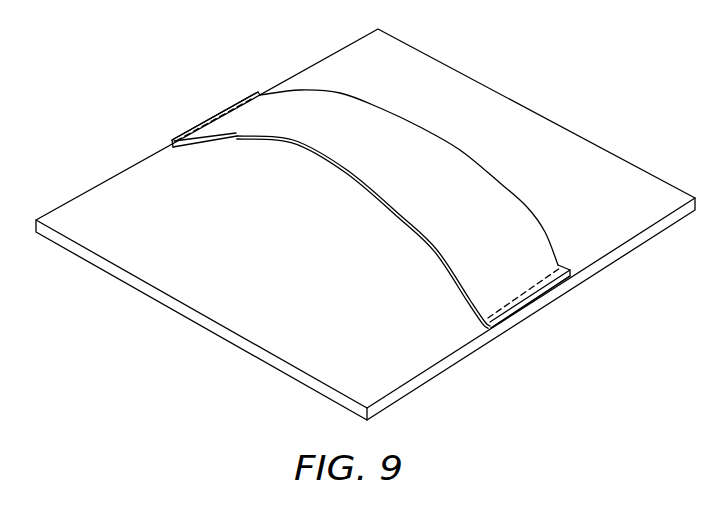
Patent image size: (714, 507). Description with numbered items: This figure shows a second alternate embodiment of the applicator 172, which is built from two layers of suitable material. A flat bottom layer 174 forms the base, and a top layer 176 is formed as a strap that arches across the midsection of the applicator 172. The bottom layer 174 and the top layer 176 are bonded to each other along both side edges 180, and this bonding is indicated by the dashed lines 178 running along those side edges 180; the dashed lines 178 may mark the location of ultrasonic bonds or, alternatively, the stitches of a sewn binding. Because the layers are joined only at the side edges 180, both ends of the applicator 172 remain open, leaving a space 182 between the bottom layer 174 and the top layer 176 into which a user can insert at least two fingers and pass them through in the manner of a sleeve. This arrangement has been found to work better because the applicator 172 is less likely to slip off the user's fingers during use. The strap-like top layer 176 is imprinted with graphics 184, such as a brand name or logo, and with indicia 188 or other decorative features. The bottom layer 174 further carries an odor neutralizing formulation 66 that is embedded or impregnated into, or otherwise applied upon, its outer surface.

The odor neutralizing formulation 66 is at (482, 367).
The applicator 172 is at (158, 82).
The bottom layer 174 is at (92, 258).
The top layer 176 is at (460, 252).
The dashed lines 178 is at (237, 110).
The side edges 180 is at (190, 127).
The space 182 is at (457, 138).
The graphics 184 is at (360, 107).
The indicia 188 is at (293, 137).